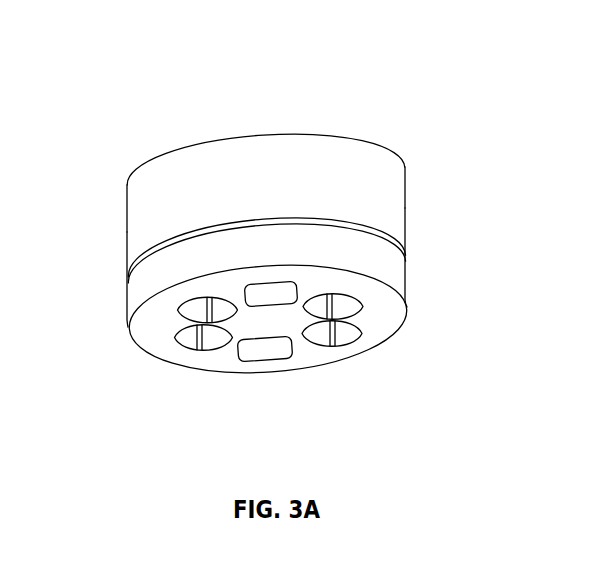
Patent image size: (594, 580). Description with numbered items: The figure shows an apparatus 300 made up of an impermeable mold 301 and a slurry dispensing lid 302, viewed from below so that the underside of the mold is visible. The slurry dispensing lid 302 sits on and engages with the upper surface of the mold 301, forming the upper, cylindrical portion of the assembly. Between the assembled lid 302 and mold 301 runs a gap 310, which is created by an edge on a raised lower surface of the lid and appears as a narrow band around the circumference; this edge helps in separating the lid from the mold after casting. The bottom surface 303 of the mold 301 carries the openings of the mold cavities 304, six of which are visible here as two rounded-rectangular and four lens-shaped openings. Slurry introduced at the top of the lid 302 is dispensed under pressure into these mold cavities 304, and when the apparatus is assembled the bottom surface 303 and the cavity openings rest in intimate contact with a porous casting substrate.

The apparatus 300 is at (333, 254).
The slurry dispensing lid 302 is at (348, 172).
The gap 310 is at (370, 223).
The mold 301 is at (400, 257).
The bottom surface 303 is at (292, 330).
The mold cavities 304 is at (176, 400).